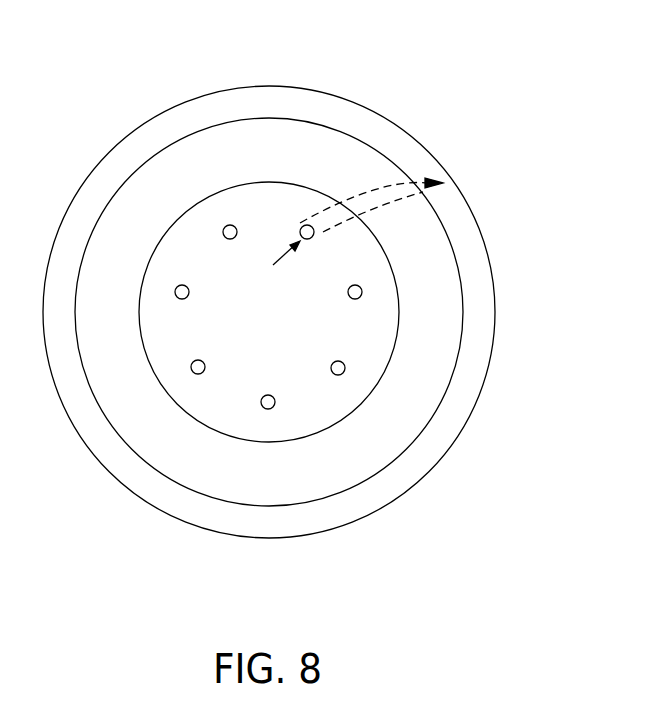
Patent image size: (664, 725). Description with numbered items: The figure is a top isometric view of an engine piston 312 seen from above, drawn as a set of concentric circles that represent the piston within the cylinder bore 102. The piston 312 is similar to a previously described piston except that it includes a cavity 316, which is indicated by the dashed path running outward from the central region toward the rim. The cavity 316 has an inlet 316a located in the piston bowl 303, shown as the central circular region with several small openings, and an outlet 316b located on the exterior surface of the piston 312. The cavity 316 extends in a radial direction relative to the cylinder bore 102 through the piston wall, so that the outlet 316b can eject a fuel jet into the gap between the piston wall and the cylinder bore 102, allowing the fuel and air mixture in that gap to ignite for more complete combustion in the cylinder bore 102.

The cylinder bore 102 is at (447, 434).
The piston 312 is at (427, 302).
The piston bowl 303 is at (305, 398).
The inlet 316a is at (300, 228).
The cavity 316 is at (363, 193).
The outlet 316b is at (414, 184).